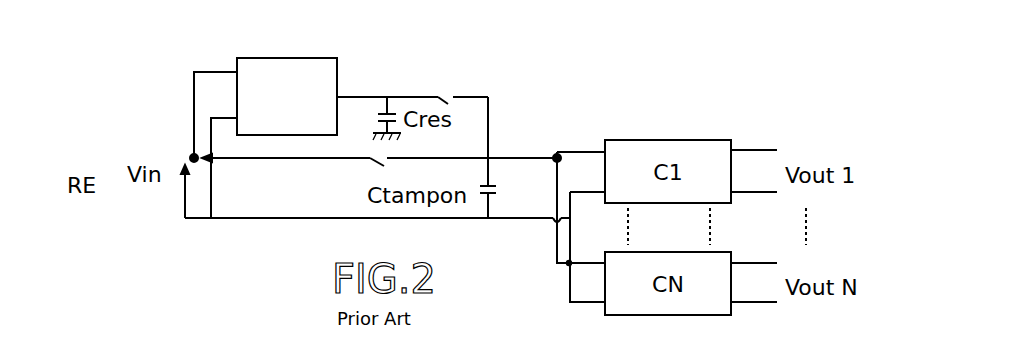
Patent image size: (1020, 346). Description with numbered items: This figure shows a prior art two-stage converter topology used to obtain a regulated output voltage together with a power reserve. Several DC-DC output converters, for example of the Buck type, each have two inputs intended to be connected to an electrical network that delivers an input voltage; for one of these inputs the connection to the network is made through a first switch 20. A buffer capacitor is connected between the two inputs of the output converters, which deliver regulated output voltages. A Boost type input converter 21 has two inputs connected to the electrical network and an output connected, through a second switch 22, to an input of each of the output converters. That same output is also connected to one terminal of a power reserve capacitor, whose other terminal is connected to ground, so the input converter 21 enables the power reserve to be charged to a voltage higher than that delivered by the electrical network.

The first switch 20 is at (395, 170).
The input converter 21 is at (321, 66).
The second switch 22 is at (445, 95).